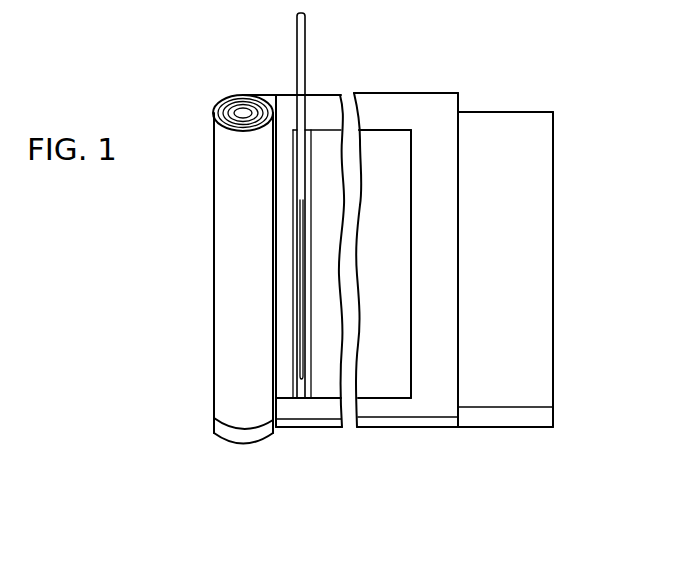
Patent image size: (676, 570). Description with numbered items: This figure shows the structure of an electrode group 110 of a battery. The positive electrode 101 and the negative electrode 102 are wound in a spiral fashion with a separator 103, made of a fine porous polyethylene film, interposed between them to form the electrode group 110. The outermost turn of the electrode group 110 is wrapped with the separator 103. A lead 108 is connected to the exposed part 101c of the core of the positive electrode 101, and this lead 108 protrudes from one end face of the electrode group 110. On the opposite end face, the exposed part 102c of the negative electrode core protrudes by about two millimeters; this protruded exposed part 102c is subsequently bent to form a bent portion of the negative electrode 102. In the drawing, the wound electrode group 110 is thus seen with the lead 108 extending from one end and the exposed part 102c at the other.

The electrode group 110 is at (230, 273).
The lead 108 is at (302, 60).
The separator 103 is at (428, 120).
The negative electrode 102 is at (515, 140).
The exposed part of the negative electrode core 102c is at (530, 415).
The positive electrode 101 is at (398, 385).
The exposed part of the core of the positive electrode 101c is at (303, 388).